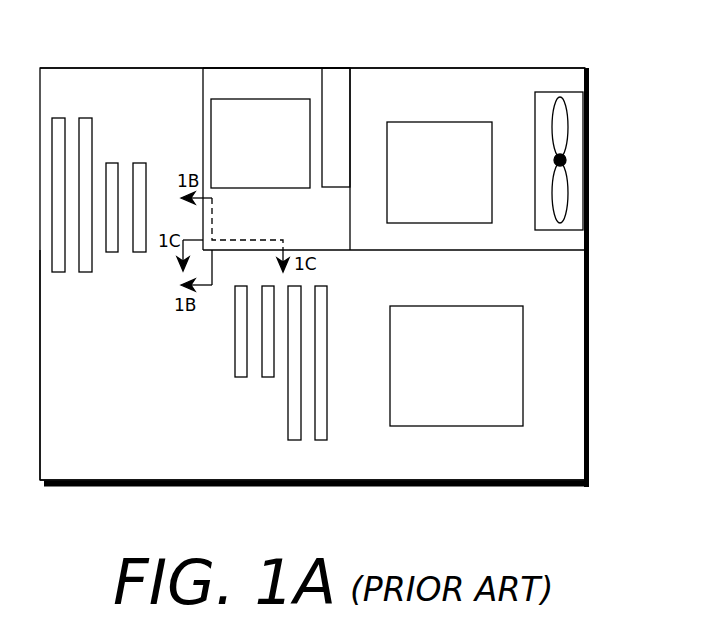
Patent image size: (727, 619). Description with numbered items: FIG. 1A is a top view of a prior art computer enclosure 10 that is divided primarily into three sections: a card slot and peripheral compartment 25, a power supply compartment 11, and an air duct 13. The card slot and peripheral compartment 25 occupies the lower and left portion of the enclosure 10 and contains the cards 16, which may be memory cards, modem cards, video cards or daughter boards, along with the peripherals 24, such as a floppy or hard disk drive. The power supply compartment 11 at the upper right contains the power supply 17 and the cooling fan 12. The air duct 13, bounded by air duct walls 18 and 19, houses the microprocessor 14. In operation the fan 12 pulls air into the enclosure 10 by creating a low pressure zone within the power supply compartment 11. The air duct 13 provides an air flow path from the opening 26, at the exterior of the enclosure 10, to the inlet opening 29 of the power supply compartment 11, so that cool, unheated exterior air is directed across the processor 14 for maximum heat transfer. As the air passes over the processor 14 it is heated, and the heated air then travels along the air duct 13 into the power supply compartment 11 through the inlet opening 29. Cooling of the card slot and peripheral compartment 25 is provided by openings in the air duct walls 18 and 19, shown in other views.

The enclosure 10 is at (650, 78).
The power supply compartment 11 is at (483, 67).
The cooling fan 12 is at (580, 167).
The air duct 13 is at (332, 229).
The microprocessor 14 is at (266, 149).
The cards 16 is at (233, 352).
The power supply 17 is at (450, 181).
The air duct wall 18 is at (203, 81).
The air duct wall 19 is at (331, 253).
The peripherals 24 is at (468, 370).
The card slot and peripheral compartment 25 is at (137, 438).
The opening 26 is at (278, 66).
The inlet opening 29 is at (353, 105).